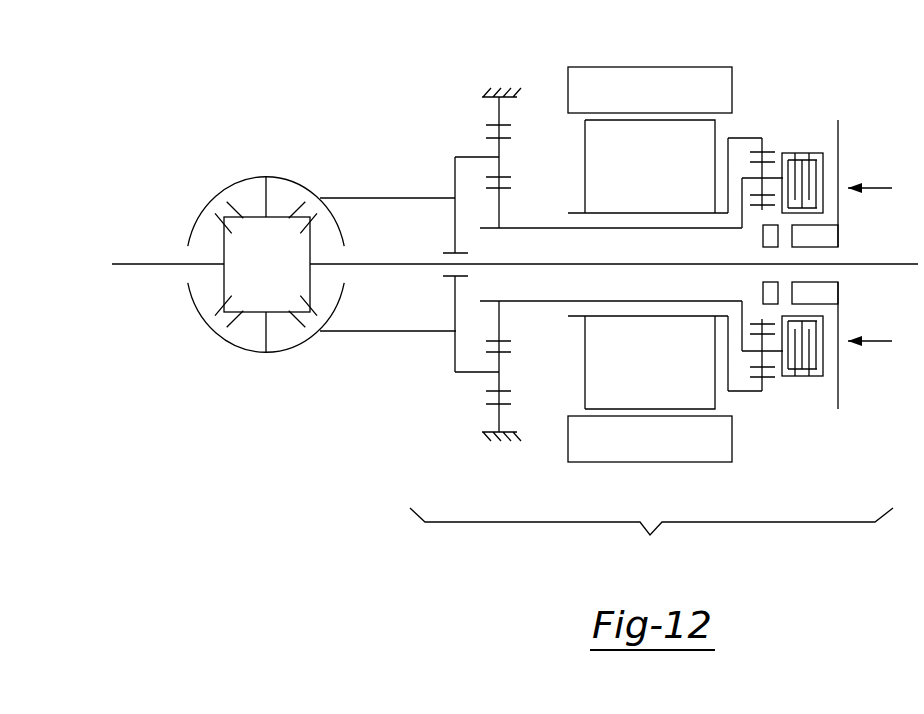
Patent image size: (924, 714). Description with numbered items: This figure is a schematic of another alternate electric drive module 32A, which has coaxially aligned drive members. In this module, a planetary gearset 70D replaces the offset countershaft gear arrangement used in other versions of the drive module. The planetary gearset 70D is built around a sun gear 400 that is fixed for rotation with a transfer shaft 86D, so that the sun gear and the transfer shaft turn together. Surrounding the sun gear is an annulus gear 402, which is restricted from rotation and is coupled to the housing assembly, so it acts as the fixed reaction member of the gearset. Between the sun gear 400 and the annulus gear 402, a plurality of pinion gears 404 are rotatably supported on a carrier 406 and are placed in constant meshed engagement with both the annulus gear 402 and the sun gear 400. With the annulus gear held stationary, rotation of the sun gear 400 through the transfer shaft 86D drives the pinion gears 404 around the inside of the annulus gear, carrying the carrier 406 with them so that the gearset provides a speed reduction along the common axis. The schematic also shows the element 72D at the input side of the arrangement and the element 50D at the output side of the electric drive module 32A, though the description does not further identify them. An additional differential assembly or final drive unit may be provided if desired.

The engine 72D is at (255, 163).
The planetary gearset 70D is at (452, 228).
The annulus gear 402 is at (500, 123).
The pinion gears 404 is at (483, 138).
The sun gear 400 is at (500, 207).
The carrier 406 is at (455, 188).
The transfer shaft 86D is at (607, 228).
The electric drive module 32A is at (753, 70).
The clutch 50D is at (808, 405).